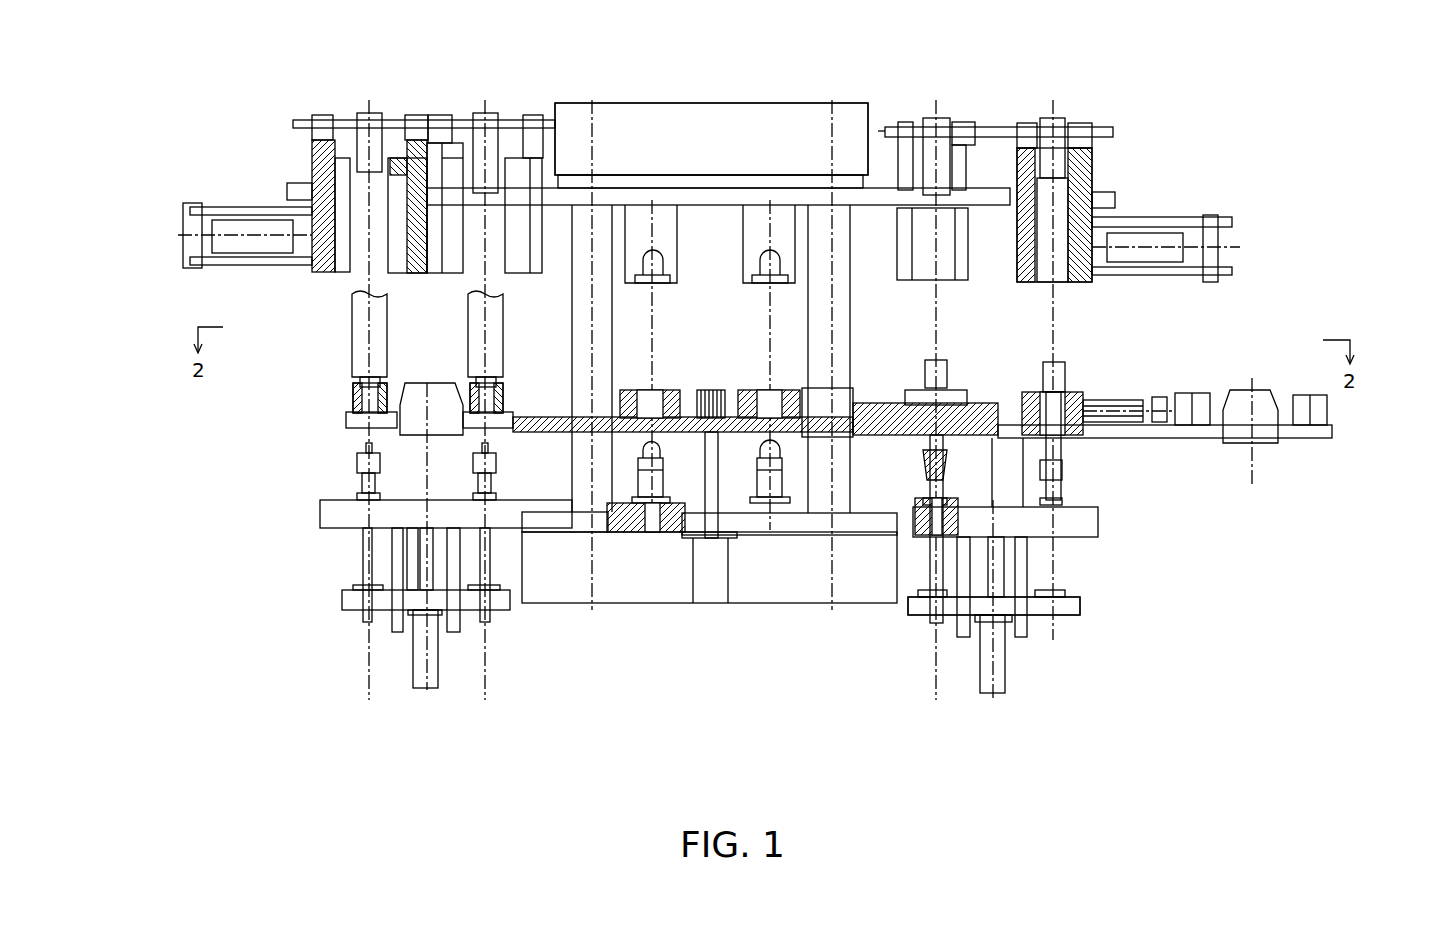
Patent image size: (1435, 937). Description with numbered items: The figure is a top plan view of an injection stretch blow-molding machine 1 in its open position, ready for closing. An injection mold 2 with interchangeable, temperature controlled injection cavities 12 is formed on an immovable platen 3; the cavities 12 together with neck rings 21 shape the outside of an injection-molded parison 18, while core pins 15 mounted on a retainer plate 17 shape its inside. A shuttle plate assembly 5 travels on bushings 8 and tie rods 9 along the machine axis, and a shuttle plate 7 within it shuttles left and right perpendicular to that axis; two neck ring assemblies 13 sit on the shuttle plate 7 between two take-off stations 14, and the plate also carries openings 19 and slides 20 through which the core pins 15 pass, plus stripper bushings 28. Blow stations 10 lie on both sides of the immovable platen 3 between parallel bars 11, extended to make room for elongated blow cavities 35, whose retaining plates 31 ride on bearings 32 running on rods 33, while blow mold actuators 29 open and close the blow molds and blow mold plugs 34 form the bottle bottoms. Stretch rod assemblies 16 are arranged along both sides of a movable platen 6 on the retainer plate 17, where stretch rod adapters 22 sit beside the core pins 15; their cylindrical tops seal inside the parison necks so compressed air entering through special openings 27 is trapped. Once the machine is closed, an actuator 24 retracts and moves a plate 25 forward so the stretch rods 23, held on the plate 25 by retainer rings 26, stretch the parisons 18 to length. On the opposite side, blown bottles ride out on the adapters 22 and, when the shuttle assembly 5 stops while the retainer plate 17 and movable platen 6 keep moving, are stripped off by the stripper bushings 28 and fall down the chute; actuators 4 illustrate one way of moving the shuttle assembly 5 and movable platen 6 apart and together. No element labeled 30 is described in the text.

The injection stretch blow-molding machine 1 is at (725, 128).
The injection mold 2 is at (640, 230).
The immovable platen 3 is at (845, 115).
The actuators 4 is at (723, 590).
The shuttle plate assembly 5 is at (997, 423).
The movable platen 6 is at (808, 585).
The shuttle plate 7 is at (1167, 430).
The bushings 8 is at (847, 455).
The tie rods 9 is at (820, 478).
The blow stations 10 is at (1090, 160).
The parallel bars 11 is at (457, 190).
The injection cavities 12 is at (770, 258).
The neck ring assemblies 13 is at (699, 388).
The take-off stations 14 is at (1298, 438).
The core pins 15 is at (762, 462).
The stretch rod assemblies 16 is at (1067, 605).
The retainer plate 17 is at (353, 518).
The parison 18 is at (1060, 362).
The openings 19 is at (642, 432).
The slides 20 is at (1093, 418).
The neck rings 21 is at (1086, 395).
The stretch rod adapters 22 is at (1057, 488).
The stretch rods 23 is at (1055, 553).
The actuator 24 is at (422, 677).
The plate 25 is at (358, 598).
The retainer rings 26 is at (1057, 597).
The openings 27 is at (943, 537).
The stripper bushings 28 is at (352, 397).
The blow mold actuators 29 is at (1210, 230).
The plate 30 is at (748, 182).
The plates 31 is at (1018, 135).
The bearings 32 is at (323, 128).
The rods 33 is at (511, 128).
The blow mold plugs 34 is at (1058, 135).
The blow cavities 35 is at (1082, 160).